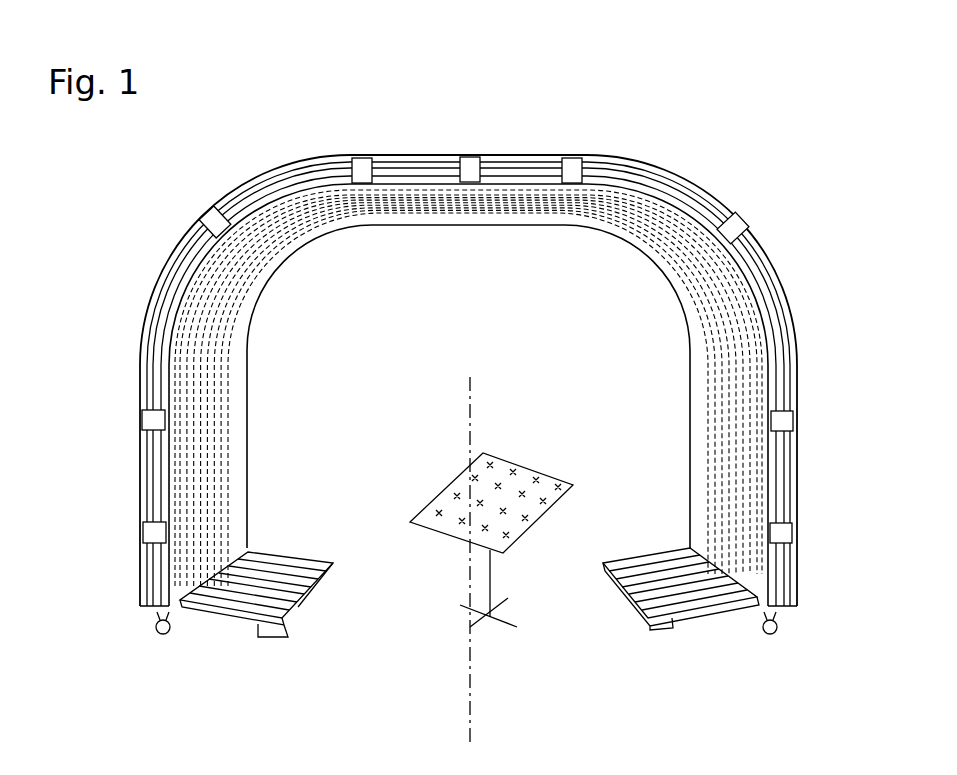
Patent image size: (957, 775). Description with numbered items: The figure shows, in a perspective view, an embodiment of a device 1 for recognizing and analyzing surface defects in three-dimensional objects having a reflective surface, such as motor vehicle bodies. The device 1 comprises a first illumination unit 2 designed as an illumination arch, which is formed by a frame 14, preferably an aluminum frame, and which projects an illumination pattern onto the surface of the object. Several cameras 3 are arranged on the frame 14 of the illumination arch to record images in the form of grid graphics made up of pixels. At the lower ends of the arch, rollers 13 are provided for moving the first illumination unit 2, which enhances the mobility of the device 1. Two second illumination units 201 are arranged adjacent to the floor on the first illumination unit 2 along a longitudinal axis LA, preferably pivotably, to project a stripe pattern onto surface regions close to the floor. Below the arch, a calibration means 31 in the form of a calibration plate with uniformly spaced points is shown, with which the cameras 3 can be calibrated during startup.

The device 1 is at (507, 346).
The frame 14 is at (800, 357).
The camera 3 is at (215, 212).
The rollers 13 is at (150, 621).
The second illumination unit 201 is at (308, 607).
The first illumination unit 2 is at (504, 518).
The calibration means 31 is at (542, 478).
The longitudinal axis LA is at (472, 725).